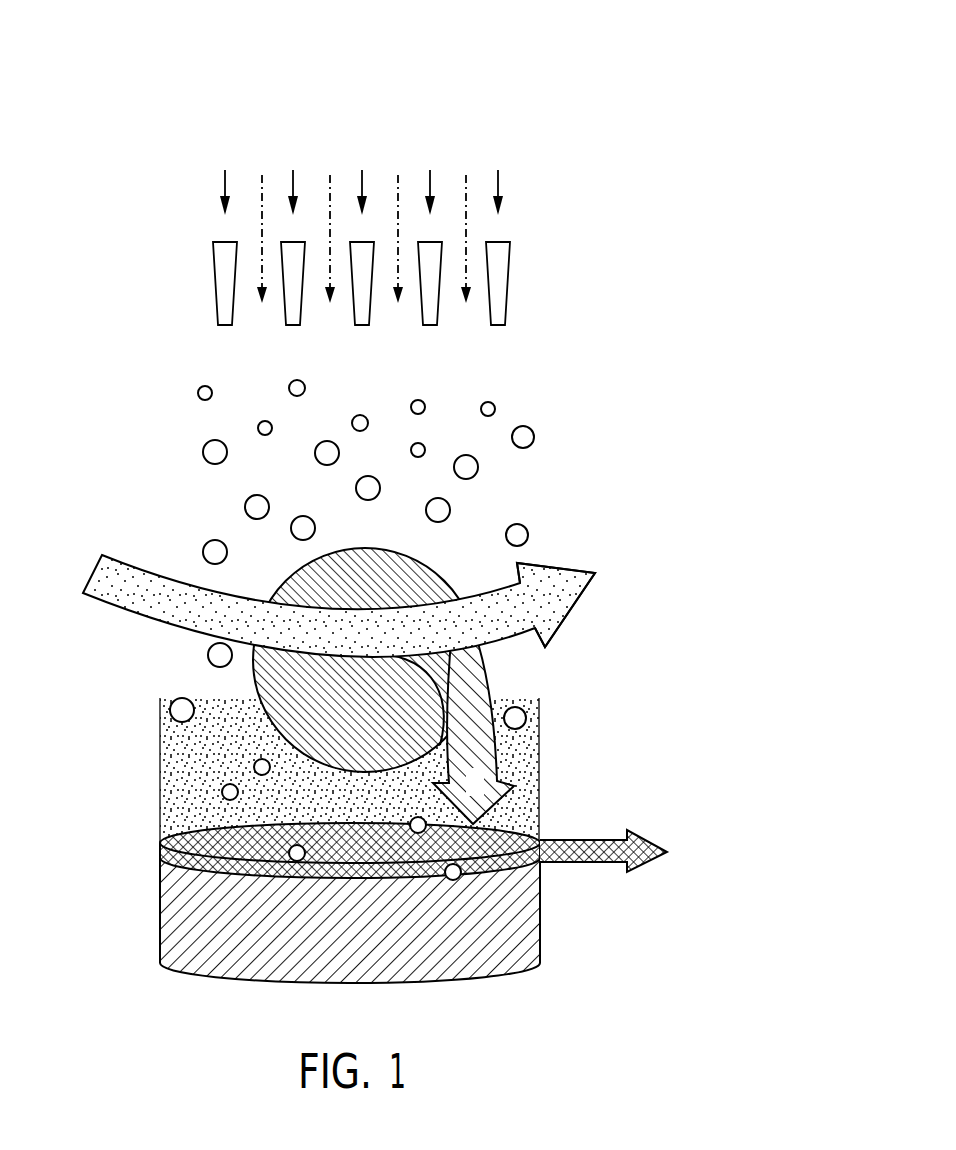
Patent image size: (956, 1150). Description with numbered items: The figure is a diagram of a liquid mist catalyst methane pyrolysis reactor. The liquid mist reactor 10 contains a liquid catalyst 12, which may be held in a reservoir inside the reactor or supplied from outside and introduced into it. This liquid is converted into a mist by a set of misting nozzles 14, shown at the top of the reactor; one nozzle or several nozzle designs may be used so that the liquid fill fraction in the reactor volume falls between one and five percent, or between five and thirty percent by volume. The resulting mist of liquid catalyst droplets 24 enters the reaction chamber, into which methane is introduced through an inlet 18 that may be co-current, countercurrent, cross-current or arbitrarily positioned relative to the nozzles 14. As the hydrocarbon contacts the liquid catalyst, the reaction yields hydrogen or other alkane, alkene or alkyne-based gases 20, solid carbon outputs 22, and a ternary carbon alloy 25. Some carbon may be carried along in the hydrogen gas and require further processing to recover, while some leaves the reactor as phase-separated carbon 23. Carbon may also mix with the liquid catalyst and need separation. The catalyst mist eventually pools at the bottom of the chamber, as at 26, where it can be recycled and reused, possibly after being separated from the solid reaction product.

The liquid mist reactor 10 is at (490, 82).
The liquid catalyst 12 is at (190, 170).
The misting nozzles 14 is at (190, 240).
The inlet 18 is at (97, 577).
The hydrogen or alkane, alkene or alkyne-based gases 20 is at (580, 597).
The solid carbon outputs 22 is at (497, 798).
The phase-separated carbon 23 is at (658, 842).
The liquid catalyst droplets 24 is at (170, 707).
The ternary carbon alloy 25 is at (427, 573).
The pool of liquid catalyst 26 is at (170, 927).